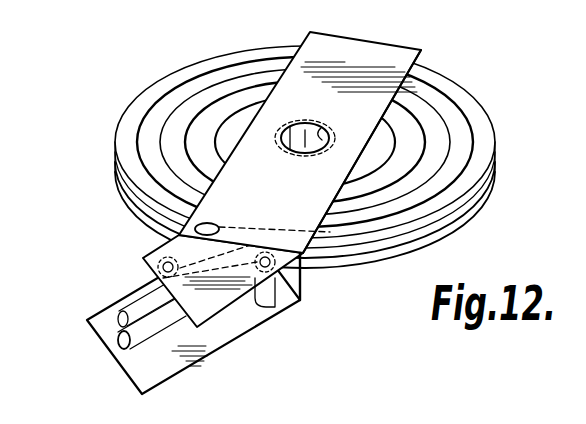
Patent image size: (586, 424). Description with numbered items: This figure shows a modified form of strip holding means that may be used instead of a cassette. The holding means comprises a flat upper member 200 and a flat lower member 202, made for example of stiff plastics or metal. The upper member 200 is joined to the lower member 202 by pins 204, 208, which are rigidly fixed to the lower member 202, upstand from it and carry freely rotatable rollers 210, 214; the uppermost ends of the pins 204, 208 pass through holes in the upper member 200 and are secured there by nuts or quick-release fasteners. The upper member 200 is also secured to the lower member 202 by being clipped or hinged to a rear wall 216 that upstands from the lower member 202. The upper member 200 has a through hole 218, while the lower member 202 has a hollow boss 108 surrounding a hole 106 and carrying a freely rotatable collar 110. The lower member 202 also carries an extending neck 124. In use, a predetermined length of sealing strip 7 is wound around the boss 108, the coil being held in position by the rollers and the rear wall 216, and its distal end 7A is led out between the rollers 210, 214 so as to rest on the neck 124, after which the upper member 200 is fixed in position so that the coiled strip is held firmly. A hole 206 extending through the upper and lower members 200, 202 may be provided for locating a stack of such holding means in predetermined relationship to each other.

The sealing strip 7 is at (497, 188).
The distal end of sealing strip 7A is at (106, 338).
The hole 106 is at (306, 155).
The hollow boss 108 is at (466, 94).
The collar 110 is at (278, 132).
The neck 124 is at (190, 340).
The upper member 200 is at (194, 183).
The lower member 202 is at (302, 305).
The pin 204 is at (150, 255).
The hole 206 is at (192, 228).
The pin 208 is at (318, 268).
The roller 210 is at (153, 270).
The roller 214 is at (263, 302).
The rear wall 216 is at (423, 50).
The through hole 218 is at (297, 122).